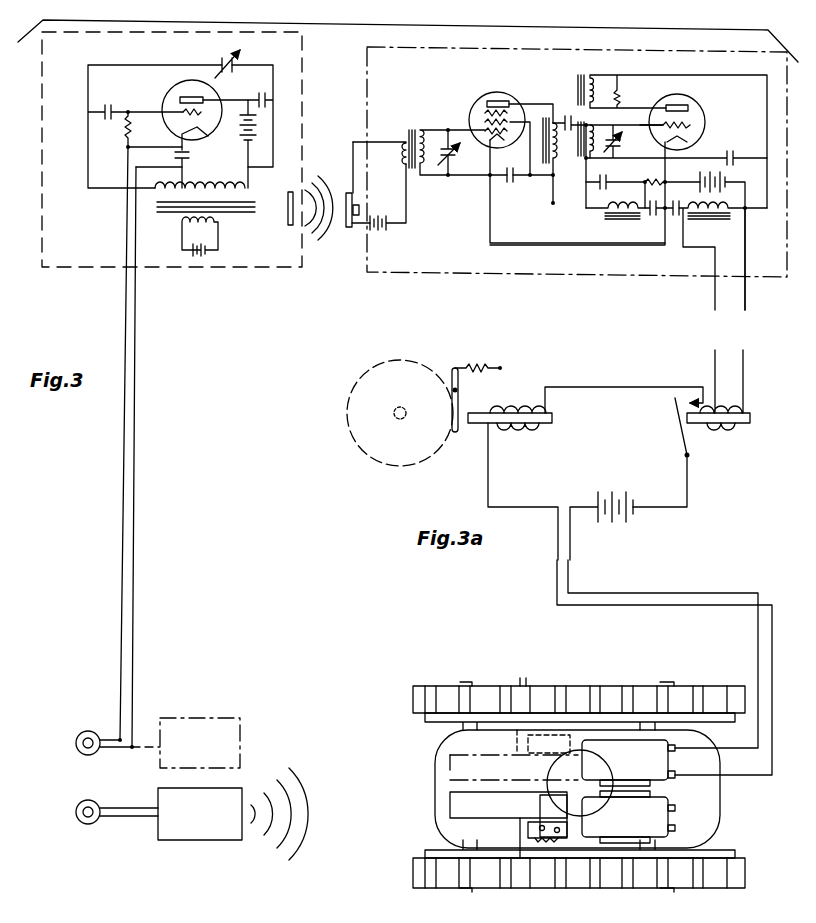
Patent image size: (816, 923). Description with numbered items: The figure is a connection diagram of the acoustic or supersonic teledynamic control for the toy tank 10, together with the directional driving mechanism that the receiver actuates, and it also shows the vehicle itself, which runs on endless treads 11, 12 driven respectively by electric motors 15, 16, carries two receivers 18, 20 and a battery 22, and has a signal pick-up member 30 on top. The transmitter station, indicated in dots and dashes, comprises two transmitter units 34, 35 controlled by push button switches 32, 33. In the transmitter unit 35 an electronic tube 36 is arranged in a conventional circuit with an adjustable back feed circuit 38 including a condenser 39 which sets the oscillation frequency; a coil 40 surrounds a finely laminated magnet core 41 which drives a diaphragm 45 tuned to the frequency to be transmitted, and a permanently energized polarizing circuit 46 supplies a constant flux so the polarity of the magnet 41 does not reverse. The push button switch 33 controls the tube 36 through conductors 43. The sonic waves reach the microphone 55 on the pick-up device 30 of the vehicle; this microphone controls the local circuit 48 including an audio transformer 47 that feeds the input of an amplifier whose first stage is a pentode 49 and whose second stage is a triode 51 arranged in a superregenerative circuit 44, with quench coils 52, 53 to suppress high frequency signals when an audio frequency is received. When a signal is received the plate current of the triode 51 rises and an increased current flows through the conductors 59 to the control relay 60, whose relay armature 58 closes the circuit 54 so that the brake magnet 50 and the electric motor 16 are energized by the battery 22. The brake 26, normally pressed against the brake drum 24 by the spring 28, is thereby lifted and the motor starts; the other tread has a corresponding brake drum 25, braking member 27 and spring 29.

In FIG. 3, the tank 10 is at (545, 891).
In FIG. 3, the endless tread 11 is at (575, 886).
In FIG. 3, the endless tread 12 is at (605, 690).
In FIG. 3, the electric motor 15 is at (670, 816).
In FIG. 3, the electric motor 16 is at (672, 773).
In FIG. 3, the receiver 18 is at (452, 806).
In FIG. 3, the receiver 20 is at (410, 268).
In FIG. 3A, the battery 22 is at (630, 518).
In FIG. 3, the brake drum 24 is at (497, 686).
In FIG. 3A, the brake drum 24 is at (425, 460).
In FIG. 3, the brake drum 25 is at (500, 888).
In FIG. 3, the brake shoe 26 is at (525, 682).
In FIG. 3A, the brake shoe 26 is at (463, 395).
In FIG. 3, the brake shoe 27 is at (517, 888).
In FIG. 3, the spring 28 is at (535, 735).
In FIG. 3A, the spring 28 is at (478, 372).
In FIG. 3, the spring 29 is at (543, 842).
In FIG. 3, the signal pick-up member 30 is at (600, 777).
In FIG. 3, the push button switch 32 is at (92, 820).
In FIG. 3, the push button switch 33 is at (92, 750).
In FIG. 3, the transmitter unit 34 is at (173, 838).
In FIG. 3, the transmitter unit 35 is at (262, 268).
In FIG. 3, the electronic tube 36 is at (166, 100).
In FIG. 3, the adjustable back feed circuit 38 is at (176, 65).
In FIG. 3, the condenser 39 is at (218, 61).
In FIG. 3, the coil 40 is at (248, 187).
In FIG. 3, the laminated magnet core 41 is at (238, 212).
In FIG. 3, the conductors 43 is at (134, 571).
In FIG. 3, the superregenerative circuit 44 is at (590, 92).
In FIG. 3, the diaphragm 45 is at (290, 226).
In FIG. 3, the polarizing circuit 46 is at (182, 224).
In FIG. 3, the audio transformer 47 is at (408, 137).
In FIG. 3, the local circuit 48 is at (398, 212).
In FIG. 3, the pentode 49 is at (503, 93).
In FIG. 3, the brake magnet 50 is at (560, 742).
In FIG. 3A, the brake magnet 50 is at (552, 418).
In FIG. 3, the triode 51 is at (683, 100).
In FIG. 3, the quench coil 52 is at (605, 210).
In FIG. 3, the quench coil 53 is at (712, 215).
In FIG. 3A, the circuit 54 is at (615, 387).
In FIG. 3, the microphone 55 is at (349, 227).
In FIG. 3A, the relay armature 58 is at (680, 425).
In FIG. 3, the conductors 59 is at (745, 282).
In FIG. 3A, the control relay 60 is at (722, 428).